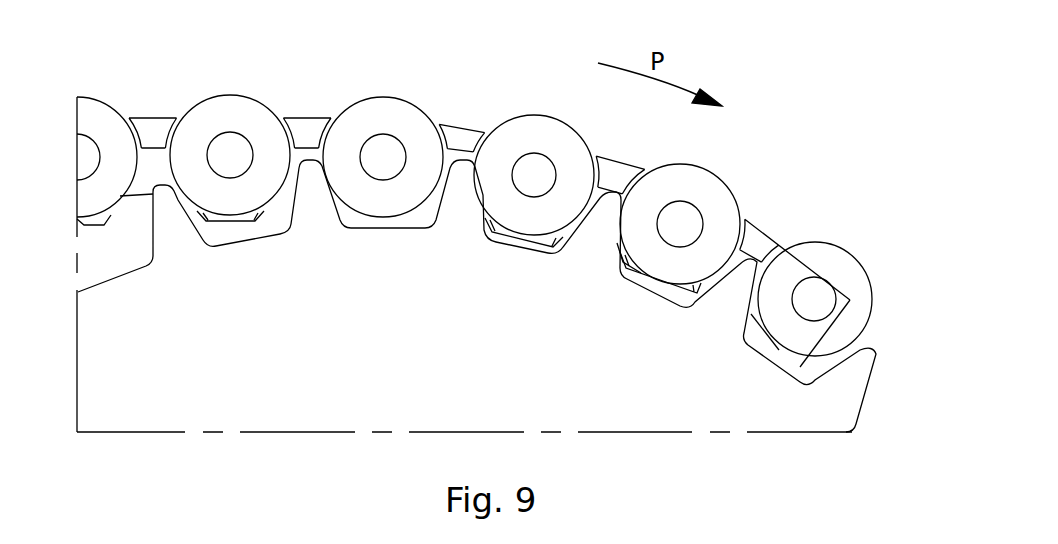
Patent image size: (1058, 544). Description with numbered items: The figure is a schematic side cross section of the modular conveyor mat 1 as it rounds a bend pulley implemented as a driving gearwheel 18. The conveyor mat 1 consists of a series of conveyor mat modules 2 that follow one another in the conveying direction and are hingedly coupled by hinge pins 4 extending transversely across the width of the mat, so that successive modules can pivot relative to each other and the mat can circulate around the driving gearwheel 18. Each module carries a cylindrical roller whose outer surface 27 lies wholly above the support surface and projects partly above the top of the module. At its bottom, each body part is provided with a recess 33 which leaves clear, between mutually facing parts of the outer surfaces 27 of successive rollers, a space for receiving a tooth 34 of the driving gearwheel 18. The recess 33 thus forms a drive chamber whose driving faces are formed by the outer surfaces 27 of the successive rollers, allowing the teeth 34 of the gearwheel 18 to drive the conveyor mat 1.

The modular conveyor mat 1 is at (490, 110).
The conveyor mat module 2 is at (308, 132).
The hinge pin 4 is at (820, 297).
The driving gearwheel 18 is at (452, 315).
The outer surface of the roller 27 is at (725, 180).
The recess 33 is at (145, 178).
The tooth 34 is at (742, 285).